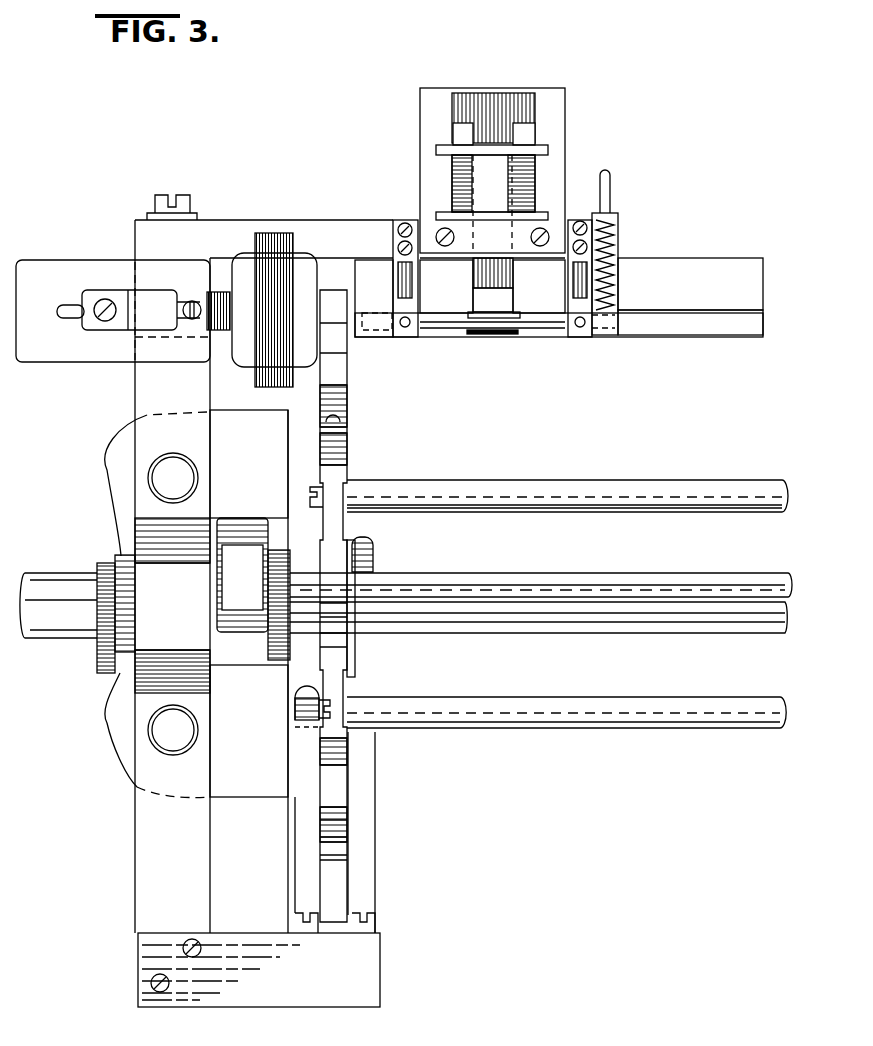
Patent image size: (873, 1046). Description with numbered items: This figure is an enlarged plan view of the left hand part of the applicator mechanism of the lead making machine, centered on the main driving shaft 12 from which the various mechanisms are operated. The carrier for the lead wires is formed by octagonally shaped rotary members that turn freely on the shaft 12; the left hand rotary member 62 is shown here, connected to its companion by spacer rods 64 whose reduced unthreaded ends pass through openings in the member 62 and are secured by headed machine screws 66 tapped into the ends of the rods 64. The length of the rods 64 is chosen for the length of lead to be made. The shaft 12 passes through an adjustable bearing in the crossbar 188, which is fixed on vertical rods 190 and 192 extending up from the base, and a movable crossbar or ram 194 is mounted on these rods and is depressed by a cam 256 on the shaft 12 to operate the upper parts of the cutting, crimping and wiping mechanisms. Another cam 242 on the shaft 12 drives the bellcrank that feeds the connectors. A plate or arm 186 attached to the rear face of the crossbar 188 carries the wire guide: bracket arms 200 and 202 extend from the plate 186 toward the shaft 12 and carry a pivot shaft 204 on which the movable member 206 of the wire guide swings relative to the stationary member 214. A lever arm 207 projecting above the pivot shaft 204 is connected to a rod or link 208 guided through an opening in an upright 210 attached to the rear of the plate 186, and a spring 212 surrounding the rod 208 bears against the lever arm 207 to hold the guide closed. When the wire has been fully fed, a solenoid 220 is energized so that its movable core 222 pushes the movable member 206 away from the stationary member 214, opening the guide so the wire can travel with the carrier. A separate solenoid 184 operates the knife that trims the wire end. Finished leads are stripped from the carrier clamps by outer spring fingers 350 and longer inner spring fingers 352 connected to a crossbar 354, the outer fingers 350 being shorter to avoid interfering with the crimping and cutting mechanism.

The main driving shaft 12 is at (40, 590).
The left hand rotary member 62 is at (335, 522).
The spacer rods 64 is at (667, 488).
The headed machine screws 66 is at (318, 487).
The solenoid 184 is at (262, 358).
The plate or arm 186 is at (332, 232).
The crossbar 188 is at (153, 842).
The vertical rod 190 is at (165, 470).
The vertical rod 192 is at (178, 735).
The movable crossbar or ram 194 is at (120, 738).
The bracket arm 200 is at (403, 293).
The bracket arm 202 is at (575, 282).
The pivot shaft 204 is at (445, 322).
The movable member of the wire guide 206 is at (700, 322).
The lever arm 207 is at (603, 338).
The rod or link 208 is at (605, 183).
The upright 210 is at (617, 213).
The spring 212 is at (613, 283).
The stationary member 214 is at (703, 267).
The solenoid 220 is at (465, 173).
The movable core 222 is at (490, 279).
The cam 242 is at (113, 660).
The cam 256 is at (232, 542).
The outer spring fingers 350 is at (303, 817).
The inner spring fingers 352 is at (363, 772).
The crossbar 354 is at (250, 993).